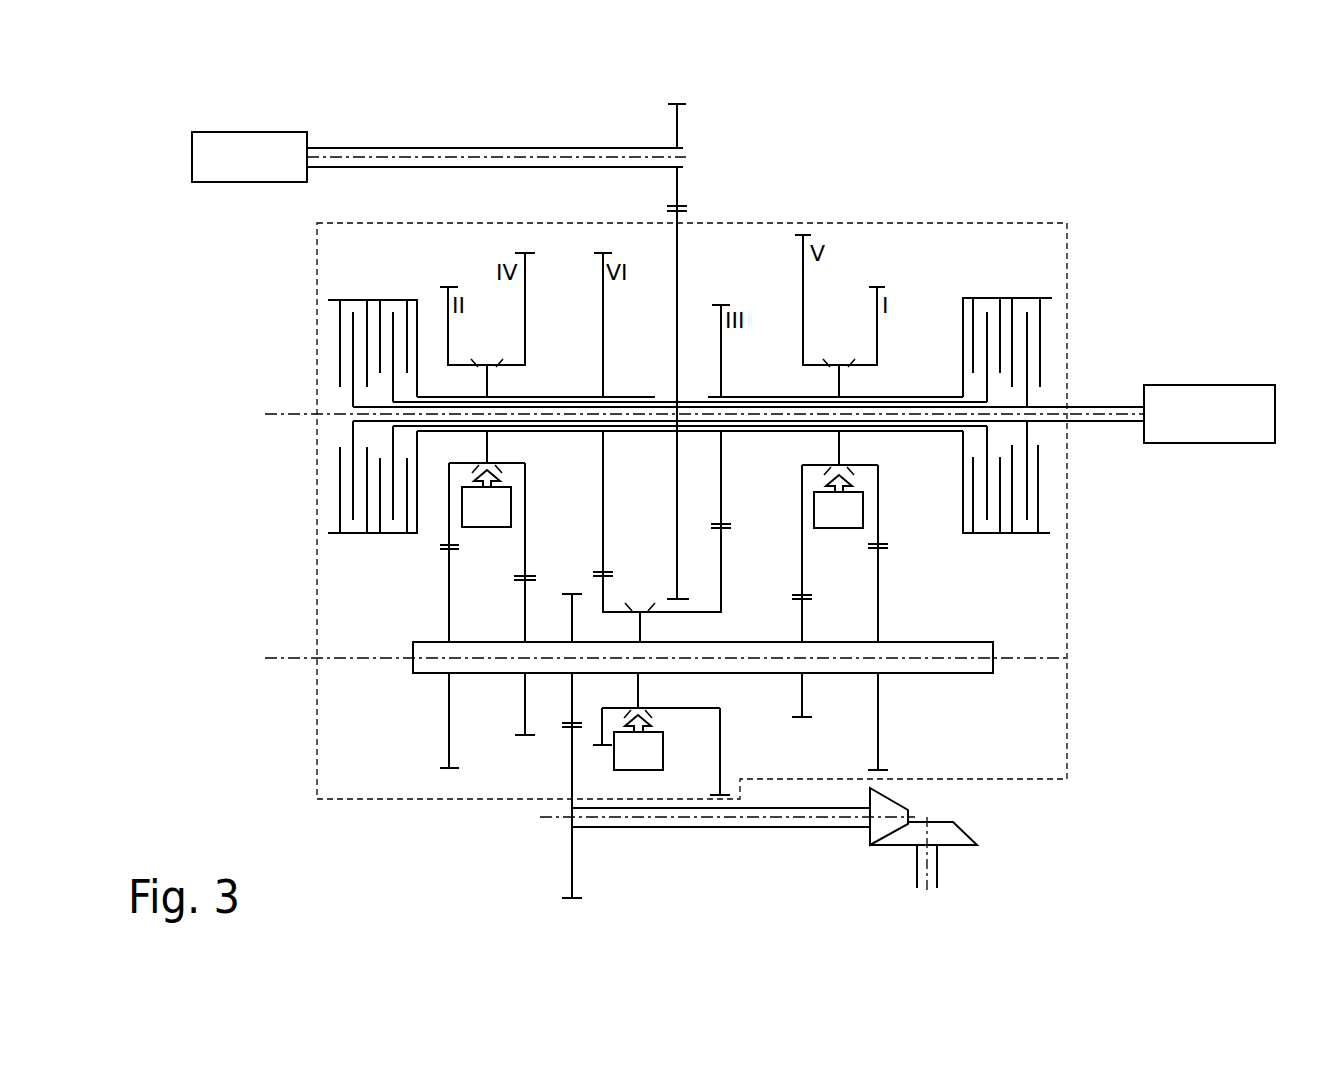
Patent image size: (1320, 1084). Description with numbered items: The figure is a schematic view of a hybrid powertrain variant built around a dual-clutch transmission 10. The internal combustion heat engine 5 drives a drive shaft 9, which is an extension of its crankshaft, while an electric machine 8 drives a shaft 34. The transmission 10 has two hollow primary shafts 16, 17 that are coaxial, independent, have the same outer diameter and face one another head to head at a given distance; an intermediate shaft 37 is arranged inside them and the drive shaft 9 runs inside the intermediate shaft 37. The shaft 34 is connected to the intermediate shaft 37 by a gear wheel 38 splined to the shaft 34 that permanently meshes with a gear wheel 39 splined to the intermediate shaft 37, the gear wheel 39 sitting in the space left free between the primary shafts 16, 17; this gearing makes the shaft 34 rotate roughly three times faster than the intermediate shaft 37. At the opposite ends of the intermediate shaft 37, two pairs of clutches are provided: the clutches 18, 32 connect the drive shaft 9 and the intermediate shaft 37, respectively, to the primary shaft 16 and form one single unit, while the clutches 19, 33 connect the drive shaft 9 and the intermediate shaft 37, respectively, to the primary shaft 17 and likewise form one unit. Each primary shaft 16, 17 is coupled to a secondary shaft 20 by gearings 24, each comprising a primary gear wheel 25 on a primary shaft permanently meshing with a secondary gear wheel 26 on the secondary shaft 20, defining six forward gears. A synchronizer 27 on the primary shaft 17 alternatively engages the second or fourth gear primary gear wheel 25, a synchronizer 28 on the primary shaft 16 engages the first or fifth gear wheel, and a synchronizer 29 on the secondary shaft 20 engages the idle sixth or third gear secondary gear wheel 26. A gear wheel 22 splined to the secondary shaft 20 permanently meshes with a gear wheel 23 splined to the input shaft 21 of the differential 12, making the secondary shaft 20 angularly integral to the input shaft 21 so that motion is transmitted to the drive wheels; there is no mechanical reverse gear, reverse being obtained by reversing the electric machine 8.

The internal combustion heat engine 5 is at (1209, 414).
The electric machine 8 is at (249, 157).
The drive shaft 9 is at (556, 395).
The dual-clutch transmission 10 is at (962, 178).
The differential 12 is at (995, 812).
The primary shaft 16 is at (935, 395).
The primary shaft 17 is at (556, 432).
The clutch 18 is at (1032, 558).
The clutch 19 is at (350, 556).
The secondary shaft 20 is at (955, 664).
The input shaft 21 is at (760, 828).
The gear wheel 22 is at (570, 603).
The gear wheel 23 is at (575, 870).
The gearing 24 is at (394, 602).
The primary gear wheel 25 is at (447, 300).
The secondary gear wheel 26 is at (445, 721).
The synchronizer 27 is at (486, 498).
The synchronizer 28 is at (838, 501).
The synchronizer 29 is at (661, 734).
The clutch 32 is at (1014, 272).
The clutch 33 is at (338, 286).
The shaft 34 is at (473, 145).
The intermediate shaft 37 is at (668, 400).
The gear wheel 38 is at (686, 118).
The gear wheel 39 is at (680, 236).